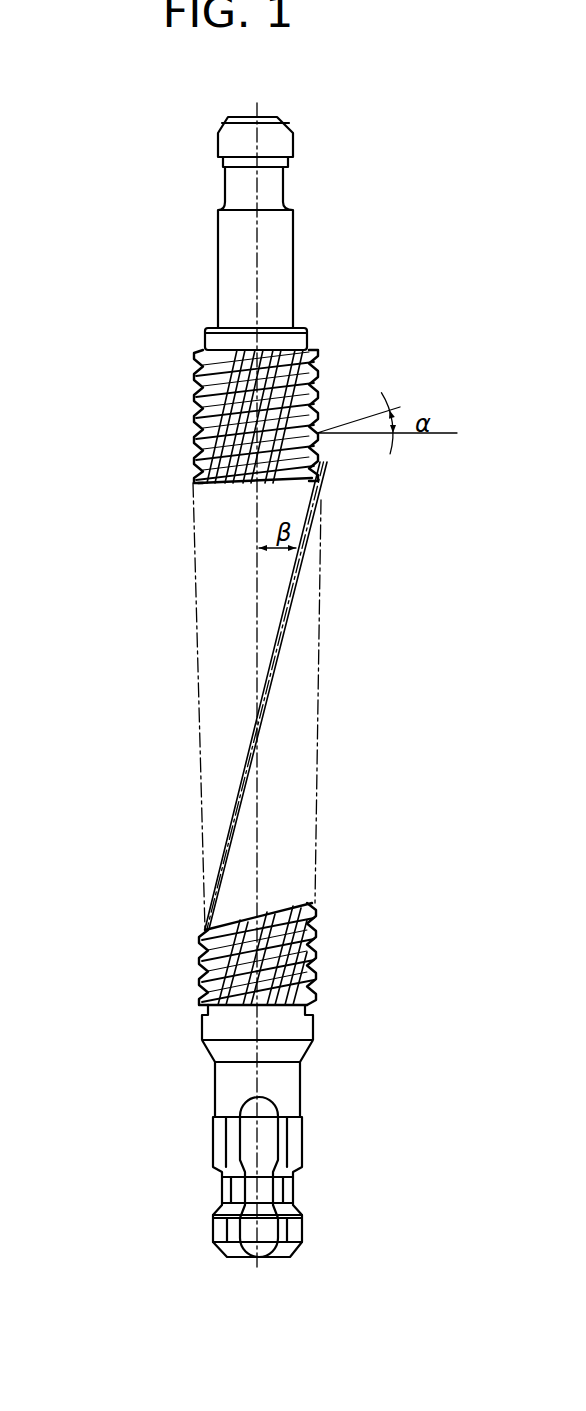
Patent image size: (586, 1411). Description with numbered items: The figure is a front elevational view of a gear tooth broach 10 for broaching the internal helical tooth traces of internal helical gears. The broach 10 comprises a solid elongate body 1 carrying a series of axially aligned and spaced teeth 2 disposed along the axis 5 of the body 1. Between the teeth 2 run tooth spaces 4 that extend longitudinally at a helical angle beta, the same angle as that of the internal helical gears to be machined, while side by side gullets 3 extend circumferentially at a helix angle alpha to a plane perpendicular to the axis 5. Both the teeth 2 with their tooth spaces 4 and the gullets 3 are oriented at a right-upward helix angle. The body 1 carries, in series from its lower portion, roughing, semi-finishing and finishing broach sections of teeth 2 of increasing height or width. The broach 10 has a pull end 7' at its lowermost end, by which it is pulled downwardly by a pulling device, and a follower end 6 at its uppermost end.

The elongate body 1 is at (213, 708).
The teeth 2 is at (197, 447).
The gullets 3 is at (313, 403).
The tooth spaces 4 is at (210, 383).
The axis 5 is at (257, 785).
The follower end 6 is at (278, 265).
The pull end 7' is at (296, 1131).
The gear tooth broach 10 is at (315, 857).